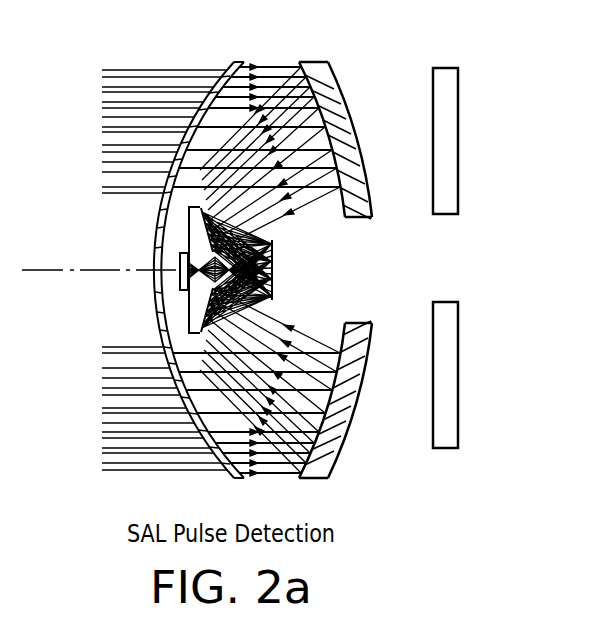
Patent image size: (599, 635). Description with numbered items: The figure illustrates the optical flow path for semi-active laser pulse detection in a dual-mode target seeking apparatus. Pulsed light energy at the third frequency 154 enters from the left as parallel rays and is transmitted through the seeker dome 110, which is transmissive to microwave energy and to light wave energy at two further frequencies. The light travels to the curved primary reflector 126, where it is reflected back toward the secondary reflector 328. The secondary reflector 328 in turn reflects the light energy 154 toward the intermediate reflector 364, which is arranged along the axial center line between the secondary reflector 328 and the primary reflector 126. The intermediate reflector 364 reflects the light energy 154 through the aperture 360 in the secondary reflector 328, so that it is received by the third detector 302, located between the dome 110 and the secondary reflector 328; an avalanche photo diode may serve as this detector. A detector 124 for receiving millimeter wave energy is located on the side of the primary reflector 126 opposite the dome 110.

The light energy at the third frequency 154 is at (146, 66).
The seeker dome 110 is at (236, 62).
The detector 124 is at (450, 85).
The primary reflector 126 is at (372, 212).
The secondary reflector 328 is at (189, 222).
The aperture 360 is at (190, 258).
The intermediate reflector 364 is at (272, 240).
The third detector 302 is at (140, 290).